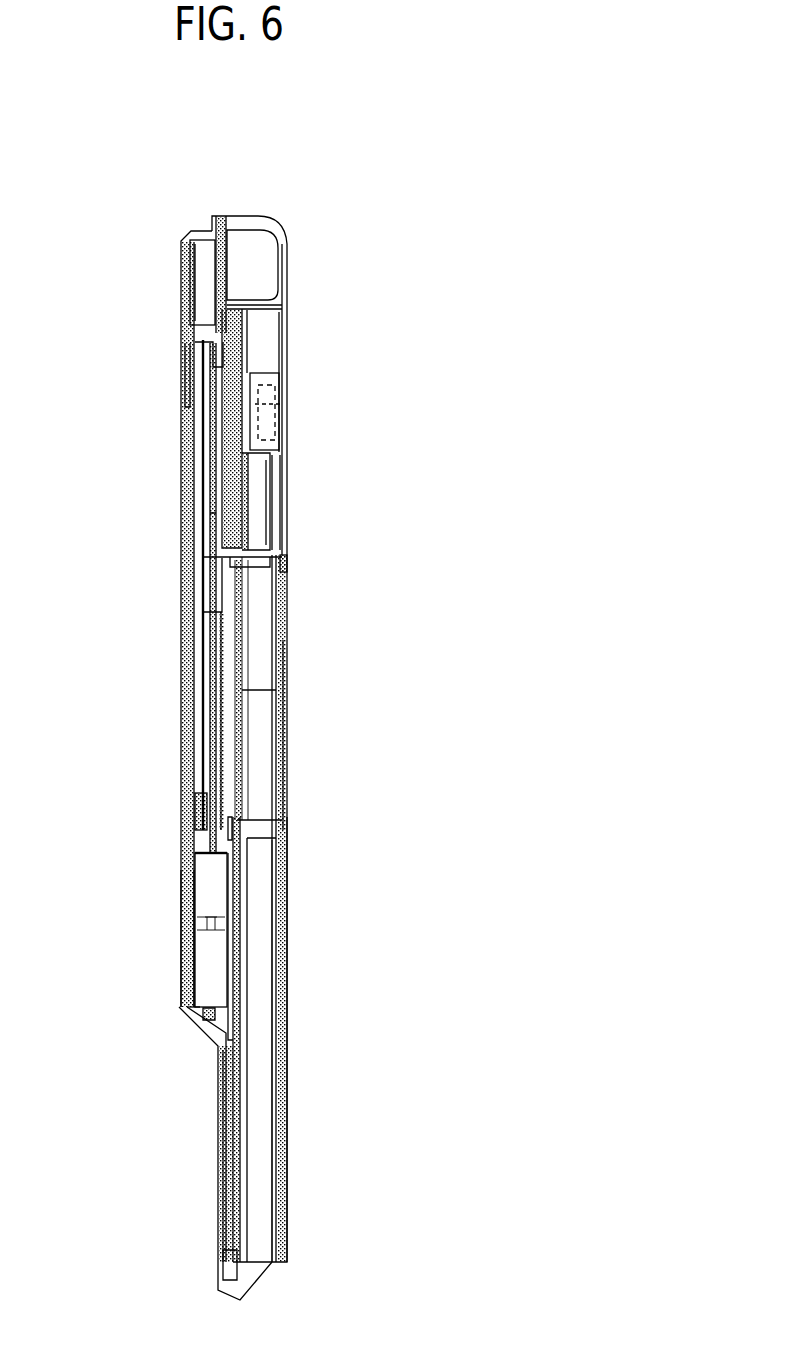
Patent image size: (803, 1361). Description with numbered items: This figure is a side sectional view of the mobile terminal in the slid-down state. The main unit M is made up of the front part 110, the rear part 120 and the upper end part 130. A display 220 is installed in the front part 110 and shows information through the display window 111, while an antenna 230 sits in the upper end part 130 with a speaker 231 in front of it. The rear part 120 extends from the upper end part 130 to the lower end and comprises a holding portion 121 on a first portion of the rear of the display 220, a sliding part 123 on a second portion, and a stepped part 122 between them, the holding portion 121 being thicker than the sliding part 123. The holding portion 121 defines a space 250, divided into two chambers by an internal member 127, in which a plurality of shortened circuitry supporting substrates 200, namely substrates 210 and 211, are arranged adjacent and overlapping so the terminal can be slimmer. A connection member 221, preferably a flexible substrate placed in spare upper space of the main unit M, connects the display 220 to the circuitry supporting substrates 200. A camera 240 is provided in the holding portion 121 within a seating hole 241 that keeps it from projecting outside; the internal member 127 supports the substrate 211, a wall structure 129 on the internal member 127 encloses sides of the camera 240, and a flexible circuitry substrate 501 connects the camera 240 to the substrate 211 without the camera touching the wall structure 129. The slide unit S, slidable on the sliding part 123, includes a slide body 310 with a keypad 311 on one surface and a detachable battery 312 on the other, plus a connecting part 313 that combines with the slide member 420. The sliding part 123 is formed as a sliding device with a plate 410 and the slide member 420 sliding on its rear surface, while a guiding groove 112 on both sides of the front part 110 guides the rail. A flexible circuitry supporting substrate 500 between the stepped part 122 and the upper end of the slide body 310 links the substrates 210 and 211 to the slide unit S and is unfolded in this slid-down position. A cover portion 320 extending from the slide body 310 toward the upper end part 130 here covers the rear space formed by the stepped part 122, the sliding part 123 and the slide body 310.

The main unit M is at (138, 198).
The slide unit S is at (327, 1202).
The front part 110 is at (183, 300).
The display window 111 is at (185, 425).
The guiding groove 112 is at (183, 940).
The rear part 120 is at (392, 533).
The holding portion 121 is at (282, 535).
The stepped part 122 is at (280, 578).
The sliding part 123 is at (222, 668).
The internal member 127 is at (232, 507).
The wall structure 129 is at (218, 372).
The upper end part 130 is at (263, 222).
The circuitry supporting substrates 200 is at (385, 455).
The circuitry supporting substrate 210 is at (282, 468).
The circuitry supporting substrate 211 is at (282, 502).
The display 220 is at (200, 683).
The connection member 221 is at (278, 355).
The antenna 230 is at (273, 270).
The speaker 231 is at (207, 253).
The camera 240 is at (282, 420).
The seating hole 241 is at (282, 378).
The space 250 is at (250, 324).
The slide body 310 is at (282, 962).
The keypad 311 is at (230, 1110).
The battery 312 is at (260, 1005).
The connecting part 313 is at (232, 900).
The cover portion 320 is at (285, 765).
The plate 410 is at (213, 787).
The slide member 420 is at (210, 900).
The flexible circuitry supporting substrate 500 is at (247, 746).
The flexible circuitry substrate 501 is at (297, 404).